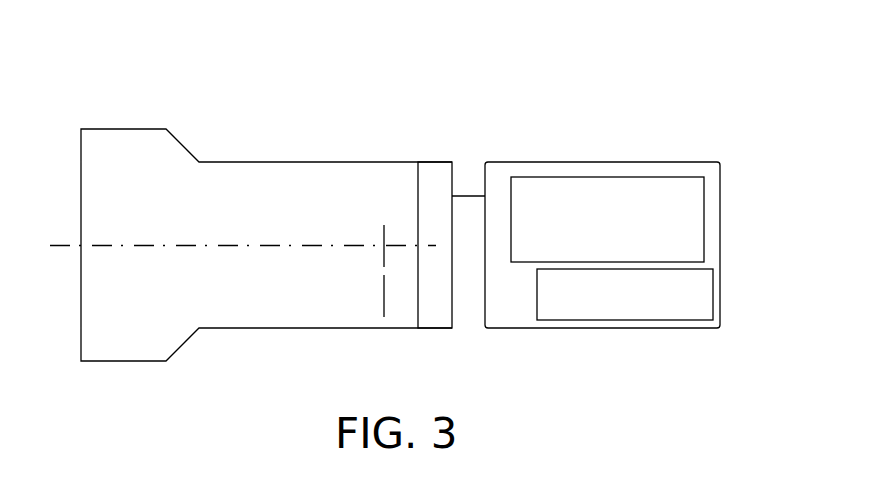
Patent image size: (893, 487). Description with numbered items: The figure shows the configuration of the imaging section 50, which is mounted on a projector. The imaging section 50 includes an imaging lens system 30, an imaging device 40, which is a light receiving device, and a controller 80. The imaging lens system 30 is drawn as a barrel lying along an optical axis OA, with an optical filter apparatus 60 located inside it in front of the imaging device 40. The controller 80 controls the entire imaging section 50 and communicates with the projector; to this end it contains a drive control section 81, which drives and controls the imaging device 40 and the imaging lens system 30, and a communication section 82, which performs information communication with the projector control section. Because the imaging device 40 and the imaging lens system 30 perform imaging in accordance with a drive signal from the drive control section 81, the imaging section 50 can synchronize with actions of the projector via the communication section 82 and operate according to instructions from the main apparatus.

The imaging section 50 is at (730, 42).
The imaging lens system 30 is at (296, 160).
The imaging device 40 is at (432, 160).
The optical filter apparatus 60 is at (371, 303).
The optical axis OA is at (353, 245).
The controller 80 is at (597, 160).
The drive control section 81 is at (530, 258).
The communication section 82 is at (643, 321).